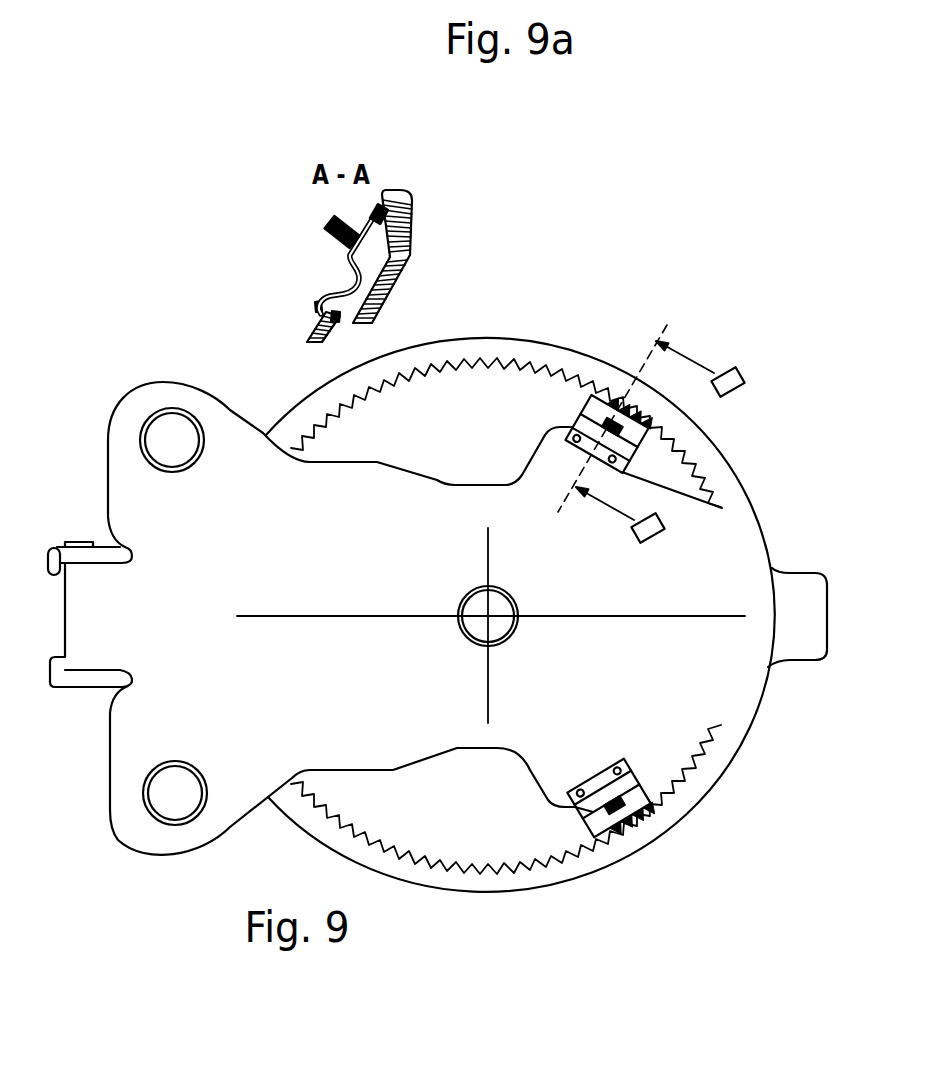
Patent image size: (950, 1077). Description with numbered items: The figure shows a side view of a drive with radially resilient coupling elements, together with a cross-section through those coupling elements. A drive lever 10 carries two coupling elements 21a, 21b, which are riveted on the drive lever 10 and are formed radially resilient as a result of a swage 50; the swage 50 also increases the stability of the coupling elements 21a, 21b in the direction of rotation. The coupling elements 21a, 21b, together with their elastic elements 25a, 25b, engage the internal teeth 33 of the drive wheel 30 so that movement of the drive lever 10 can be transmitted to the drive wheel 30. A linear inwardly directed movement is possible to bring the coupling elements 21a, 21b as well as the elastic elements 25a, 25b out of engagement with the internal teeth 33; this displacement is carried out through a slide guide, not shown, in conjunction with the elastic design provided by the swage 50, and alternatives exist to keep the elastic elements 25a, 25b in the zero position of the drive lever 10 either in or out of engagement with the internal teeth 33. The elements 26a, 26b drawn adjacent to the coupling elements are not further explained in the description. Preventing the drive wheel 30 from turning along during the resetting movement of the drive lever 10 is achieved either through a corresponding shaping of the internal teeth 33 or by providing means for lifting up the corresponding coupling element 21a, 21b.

In FIG. 9, the drive lever 10 is at (703, 548).
In FIG. 9, the drive wheel 30 is at (532, 340).
In FIG. 9a, the drive wheel 30 is at (385, 298).
In FIG. 9, the internal teeth 33 is at (312, 418).
In FIG. 9, the coupling element 21a is at (582, 397).
In FIG. 9a, the coupling element 21a is at (348, 277).
In FIG. 9, the coupling element 21b is at (593, 815).
In FIG. 9, the elastic element 25a is at (600, 397).
In FIG. 9a, the elastic element 25a is at (392, 200).
In FIG. 9, the elastic element 25b is at (623, 833).
In FIG. 9, the upper release element 26a is at (627, 413).
In FIG. 9a, the upper release element 26a is at (328, 233).
In FIG. 9, the lower release element 26b is at (653, 813).
In FIG. 9, the swage 50 is at (593, 812).
In FIG. 9a, the swage 50 is at (348, 285).